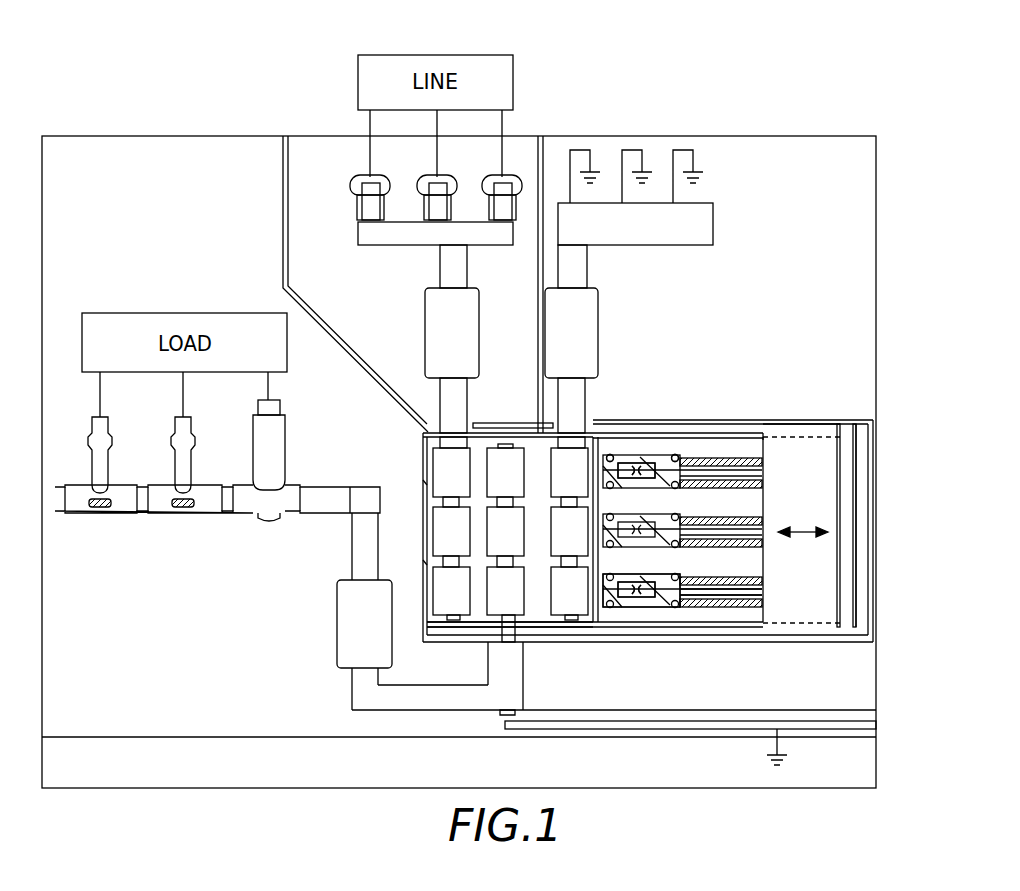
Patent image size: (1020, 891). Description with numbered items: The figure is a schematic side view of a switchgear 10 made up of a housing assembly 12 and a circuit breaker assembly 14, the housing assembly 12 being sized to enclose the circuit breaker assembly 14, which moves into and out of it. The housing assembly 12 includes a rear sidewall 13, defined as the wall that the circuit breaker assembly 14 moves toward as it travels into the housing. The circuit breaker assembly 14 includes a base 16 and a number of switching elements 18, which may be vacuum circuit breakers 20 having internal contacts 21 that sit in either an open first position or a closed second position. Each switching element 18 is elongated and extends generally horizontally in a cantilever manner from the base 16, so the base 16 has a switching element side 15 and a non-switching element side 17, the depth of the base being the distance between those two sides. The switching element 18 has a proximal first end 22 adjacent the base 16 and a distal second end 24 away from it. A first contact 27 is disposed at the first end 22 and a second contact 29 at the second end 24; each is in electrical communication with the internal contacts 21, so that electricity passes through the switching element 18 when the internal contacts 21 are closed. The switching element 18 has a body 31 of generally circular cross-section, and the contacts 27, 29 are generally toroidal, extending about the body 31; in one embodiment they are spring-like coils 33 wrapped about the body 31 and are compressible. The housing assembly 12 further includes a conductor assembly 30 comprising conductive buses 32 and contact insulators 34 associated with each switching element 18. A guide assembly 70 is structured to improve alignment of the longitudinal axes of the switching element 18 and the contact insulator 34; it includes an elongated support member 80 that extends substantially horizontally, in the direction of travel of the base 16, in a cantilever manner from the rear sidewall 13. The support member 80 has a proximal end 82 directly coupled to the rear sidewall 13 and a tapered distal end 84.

The switchgear 10 is at (268, 88).
The housing assembly 12 is at (148, 135).
The rear sidewall 13 is at (425, 618).
The circuit breaker assembly 14 is at (806, 432).
The switching element side 15 is at (770, 430).
The base 16 is at (818, 572).
The non-switching element side 17 is at (853, 440).
The switching element 18 is at (659, 378).
The vacuum circuit breaker 20 is at (642, 464).
The internal contacts 21 is at (635, 612).
The first end 22 is at (660, 612).
The second end 24 is at (620, 612).
The first contact 27 is at (676, 455).
The second contact 29 is at (610, 450).
The conductor assembly 30 is at (378, 426).
The switching element body 31 is at (628, 462).
The conductive buses 32 is at (432, 335).
The spring-like coils 33 is at (613, 565).
The contact insulator 34 is at (428, 582).
The guide assembly 70 is at (888, 434).
The support member 80 is at (527, 435).
The proximal end 82 is at (430, 430).
The distal end 84 is at (763, 437).